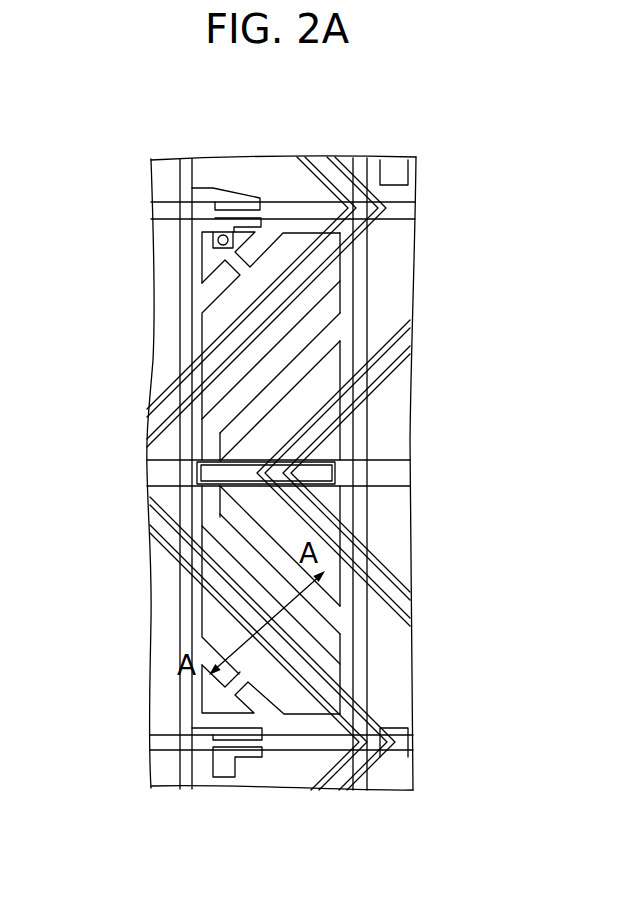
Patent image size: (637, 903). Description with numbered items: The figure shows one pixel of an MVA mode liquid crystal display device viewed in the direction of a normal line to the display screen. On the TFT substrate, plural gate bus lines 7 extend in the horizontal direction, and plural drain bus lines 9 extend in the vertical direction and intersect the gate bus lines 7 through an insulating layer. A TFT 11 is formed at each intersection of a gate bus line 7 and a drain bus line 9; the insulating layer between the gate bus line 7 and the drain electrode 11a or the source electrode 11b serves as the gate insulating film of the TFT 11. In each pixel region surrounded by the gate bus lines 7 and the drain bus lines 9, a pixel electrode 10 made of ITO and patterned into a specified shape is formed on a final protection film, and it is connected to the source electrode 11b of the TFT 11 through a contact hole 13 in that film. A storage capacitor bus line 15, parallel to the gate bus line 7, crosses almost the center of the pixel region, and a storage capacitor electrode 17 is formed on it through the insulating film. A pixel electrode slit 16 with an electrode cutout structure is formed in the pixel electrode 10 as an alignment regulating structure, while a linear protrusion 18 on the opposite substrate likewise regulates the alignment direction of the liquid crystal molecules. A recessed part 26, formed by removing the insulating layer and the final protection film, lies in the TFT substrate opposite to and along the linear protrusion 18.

The gate bus line 7 is at (175, 209).
The drain bus line 9 is at (186, 170).
The pixel electrode 10 is at (414, 700).
The TFT 11 is at (168, 477).
The drain electrode 11a is at (238, 188).
The source electrode 11b is at (212, 224).
The contact hole 13 is at (216, 242).
The storage capacitor bus line 15 is at (160, 470).
The pixel electrode slit 16 is at (273, 232).
The storage capacitor electrode 17 is at (325, 476).
The linear protrusion 18 is at (310, 160).
The recessed part 26 is at (147, 437).